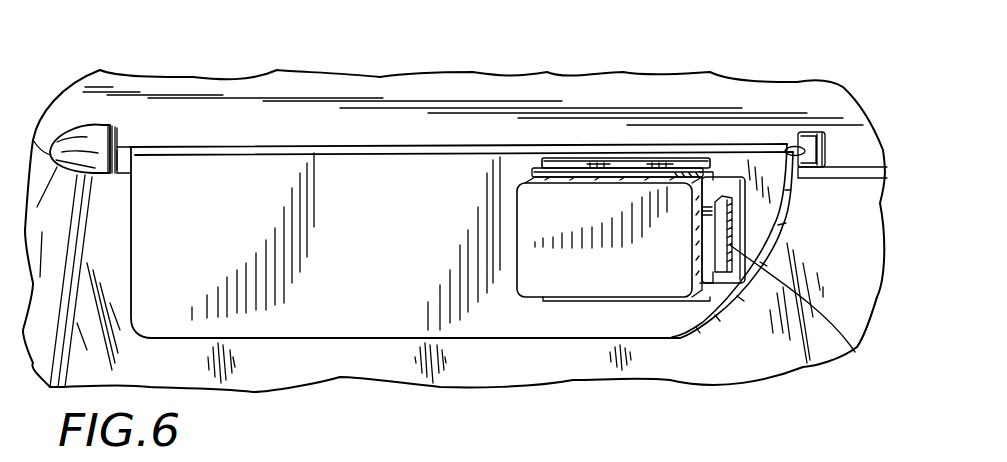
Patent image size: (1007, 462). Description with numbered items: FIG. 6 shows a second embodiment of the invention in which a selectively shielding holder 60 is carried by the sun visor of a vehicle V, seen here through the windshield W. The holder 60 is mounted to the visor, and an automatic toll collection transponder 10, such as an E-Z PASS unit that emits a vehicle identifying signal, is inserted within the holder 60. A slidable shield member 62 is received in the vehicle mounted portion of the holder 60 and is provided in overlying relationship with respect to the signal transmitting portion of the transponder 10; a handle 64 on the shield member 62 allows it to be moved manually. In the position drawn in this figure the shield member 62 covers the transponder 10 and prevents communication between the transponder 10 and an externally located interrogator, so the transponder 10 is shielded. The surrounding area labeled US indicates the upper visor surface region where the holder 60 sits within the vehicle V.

The automatic toll collection transponder 10 is at (532, 208).
The selectively shielding holder 60 is at (724, 160).
The slidable shield member 62 is at (719, 282).
The handle 64 is at (745, 260).
The sun visor US is at (203, 167).
The windshield W is at (565, 365).
The vehicle V is at (845, 357).